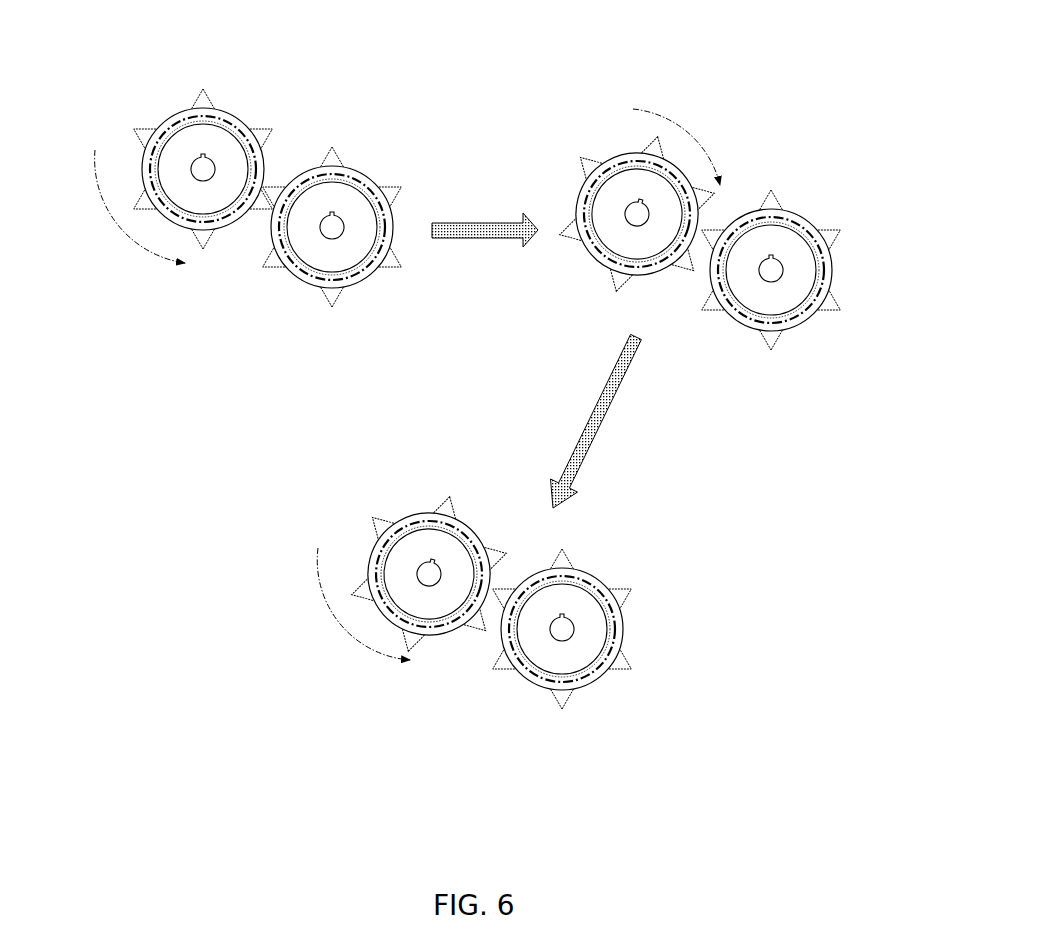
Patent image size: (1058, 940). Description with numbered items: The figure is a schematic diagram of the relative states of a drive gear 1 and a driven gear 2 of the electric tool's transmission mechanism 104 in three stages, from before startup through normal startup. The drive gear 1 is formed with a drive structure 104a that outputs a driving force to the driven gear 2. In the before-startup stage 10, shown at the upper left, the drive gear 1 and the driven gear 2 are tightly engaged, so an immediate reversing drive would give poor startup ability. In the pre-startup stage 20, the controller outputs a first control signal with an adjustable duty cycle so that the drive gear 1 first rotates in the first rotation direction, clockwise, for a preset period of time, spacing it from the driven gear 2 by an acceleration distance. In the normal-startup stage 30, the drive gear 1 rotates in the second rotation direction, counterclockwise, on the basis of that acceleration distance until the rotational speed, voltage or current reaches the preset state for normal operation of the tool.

The drive gear 1 is at (414, 349).
The driven gear 2 is at (561, 441).
The before-startup stage 10 is at (193, 304).
The pre-startup stage 20 is at (792, 136).
The normal-startup stage 30 is at (468, 688).
The transmission mechanism 104 is at (261, 277).
The drive structure 104a is at (273, 137).